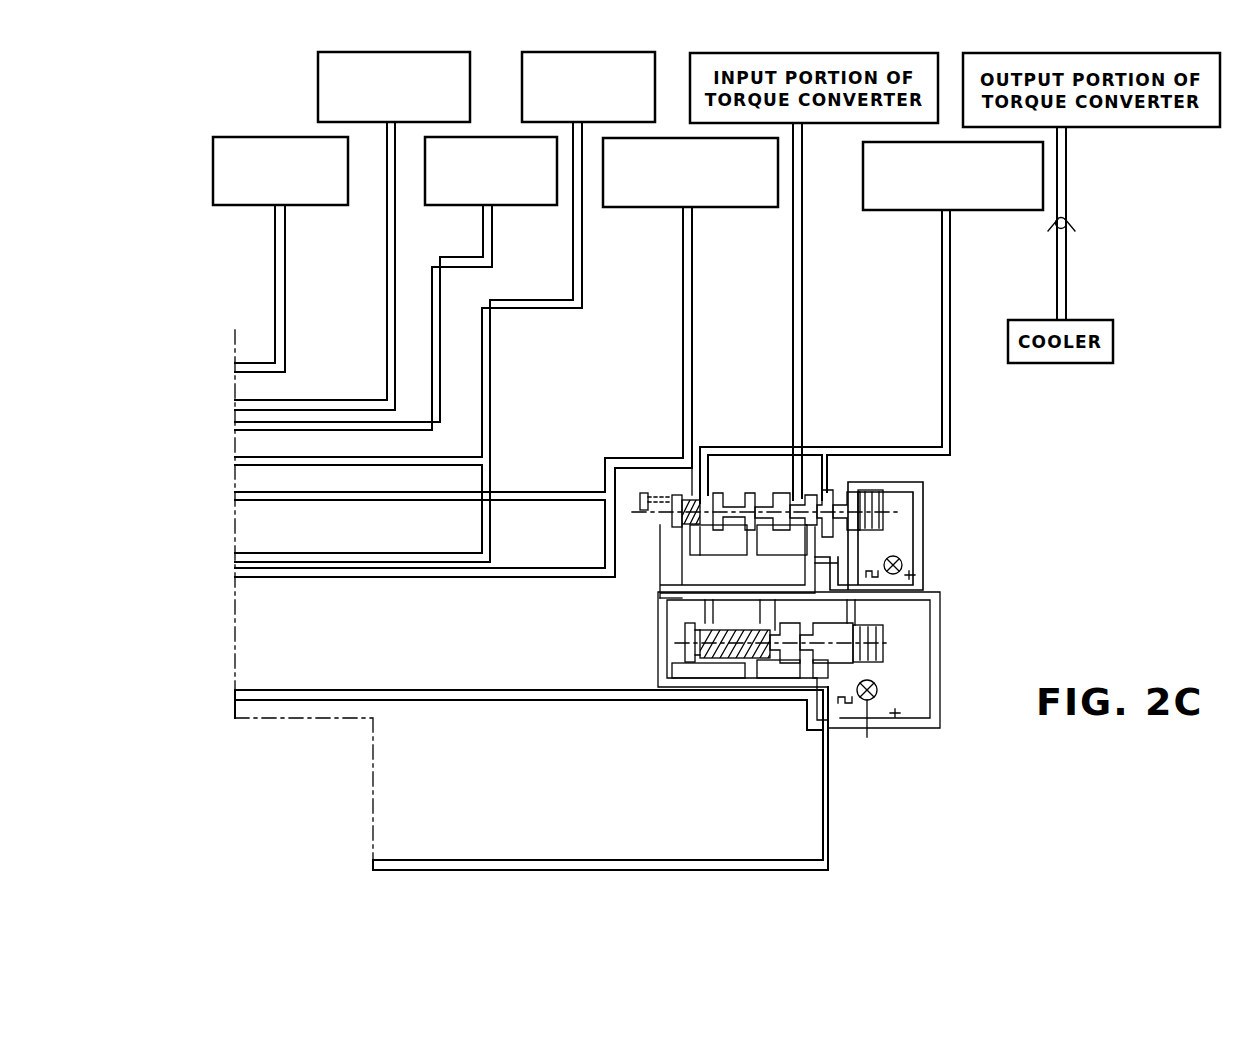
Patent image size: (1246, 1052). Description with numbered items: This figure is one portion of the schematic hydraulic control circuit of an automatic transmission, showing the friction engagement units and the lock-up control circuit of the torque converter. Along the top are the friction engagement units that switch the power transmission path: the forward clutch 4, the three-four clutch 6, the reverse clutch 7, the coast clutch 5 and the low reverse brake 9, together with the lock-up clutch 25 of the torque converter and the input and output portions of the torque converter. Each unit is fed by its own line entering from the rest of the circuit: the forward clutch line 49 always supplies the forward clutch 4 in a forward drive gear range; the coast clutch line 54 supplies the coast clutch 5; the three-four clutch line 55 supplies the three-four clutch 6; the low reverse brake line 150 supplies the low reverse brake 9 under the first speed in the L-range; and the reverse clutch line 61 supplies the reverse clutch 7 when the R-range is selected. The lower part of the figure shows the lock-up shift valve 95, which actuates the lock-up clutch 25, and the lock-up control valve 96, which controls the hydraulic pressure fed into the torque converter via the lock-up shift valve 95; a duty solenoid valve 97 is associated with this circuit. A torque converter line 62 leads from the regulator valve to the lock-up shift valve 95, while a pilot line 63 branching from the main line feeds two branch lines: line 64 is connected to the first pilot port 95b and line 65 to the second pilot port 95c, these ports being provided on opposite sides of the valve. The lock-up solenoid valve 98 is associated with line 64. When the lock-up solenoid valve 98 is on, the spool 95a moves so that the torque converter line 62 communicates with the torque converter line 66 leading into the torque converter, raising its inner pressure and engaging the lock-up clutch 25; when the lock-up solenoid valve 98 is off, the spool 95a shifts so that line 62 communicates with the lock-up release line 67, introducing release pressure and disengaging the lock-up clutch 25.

The forward clutch 4 is at (318, 101).
The 3-4 clutch 6 is at (522, 89).
The reverse clutch 7 is at (234, 206).
The coast clutch 5 is at (539, 206).
The low reverse brake 9 is at (660, 208).
The lock-up clutch 25 is at (912, 212).
The reverse clutch line 61 is at (285, 305).
The forward clutch line 49 is at (387, 335).
The coast clutch line 54 is at (483, 268).
The 3-4 clutch line 55 is at (573, 310).
The low reverse brake line 150 is at (693, 360).
The torque converter line 66 is at (803, 353).
The lock-up release line 67 is at (952, 312).
The lock-up shift valve 95 is at (772, 499).
The spool 95a is at (822, 485).
The first pilot port 95b is at (848, 482).
The second pilot port 95c is at (640, 535).
The line 64 is at (923, 520).
The lock-up solenoid valve 98 is at (900, 554).
The line 65 is at (663, 577).
The lock-up control valve 96 is at (883, 635).
The duty solenoid valve 97 is at (867, 737).
The pilot line 63 is at (418, 690).
The torque converter line 62 is at (573, 860).